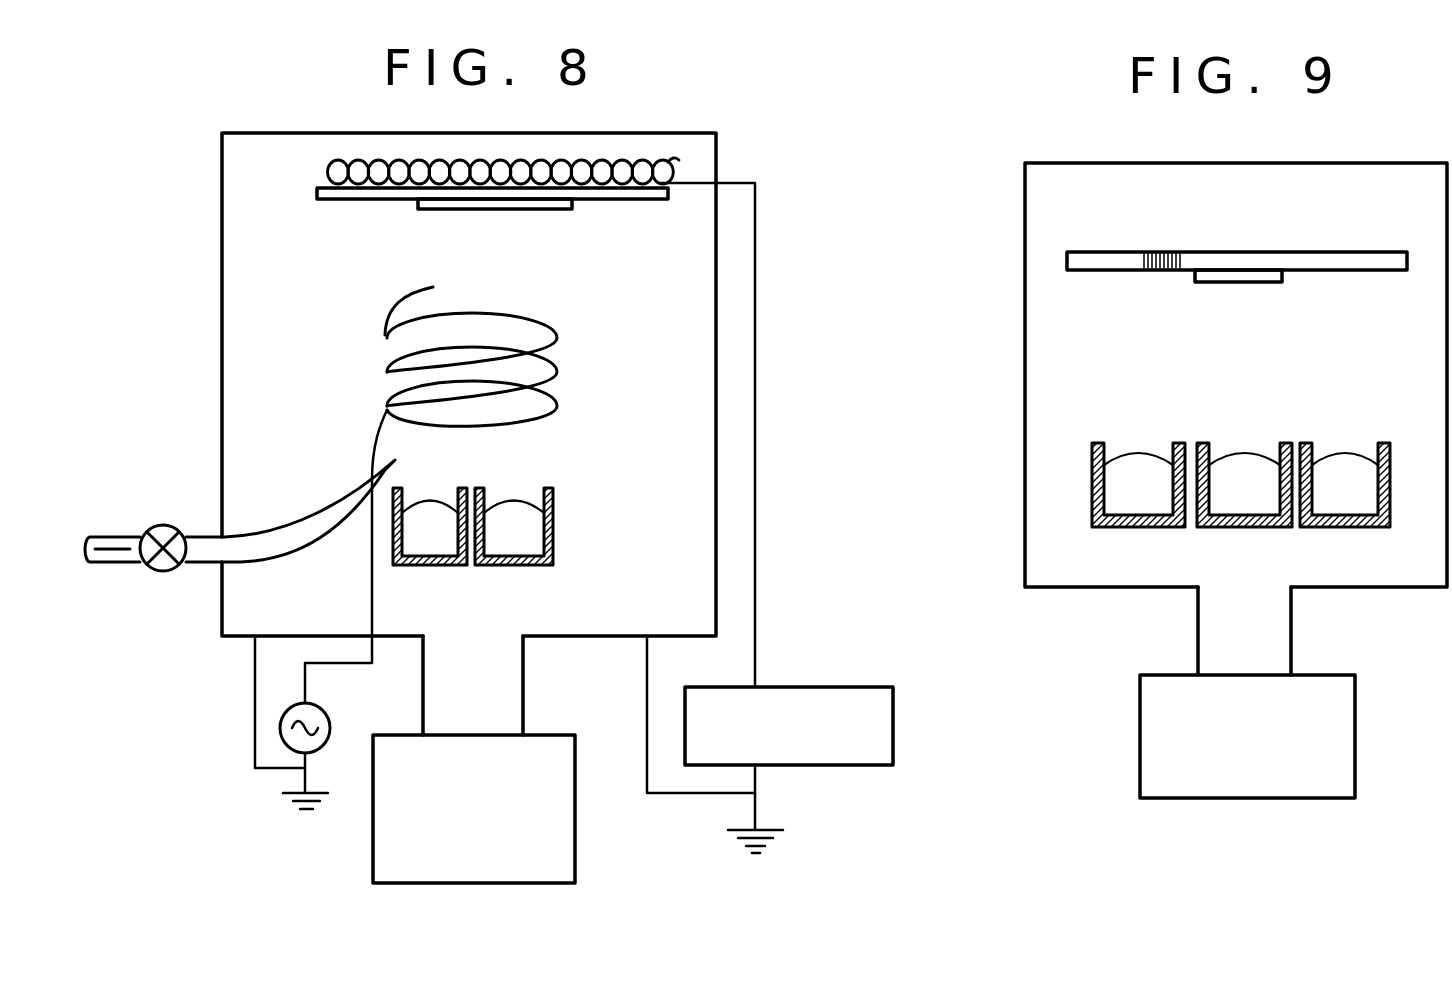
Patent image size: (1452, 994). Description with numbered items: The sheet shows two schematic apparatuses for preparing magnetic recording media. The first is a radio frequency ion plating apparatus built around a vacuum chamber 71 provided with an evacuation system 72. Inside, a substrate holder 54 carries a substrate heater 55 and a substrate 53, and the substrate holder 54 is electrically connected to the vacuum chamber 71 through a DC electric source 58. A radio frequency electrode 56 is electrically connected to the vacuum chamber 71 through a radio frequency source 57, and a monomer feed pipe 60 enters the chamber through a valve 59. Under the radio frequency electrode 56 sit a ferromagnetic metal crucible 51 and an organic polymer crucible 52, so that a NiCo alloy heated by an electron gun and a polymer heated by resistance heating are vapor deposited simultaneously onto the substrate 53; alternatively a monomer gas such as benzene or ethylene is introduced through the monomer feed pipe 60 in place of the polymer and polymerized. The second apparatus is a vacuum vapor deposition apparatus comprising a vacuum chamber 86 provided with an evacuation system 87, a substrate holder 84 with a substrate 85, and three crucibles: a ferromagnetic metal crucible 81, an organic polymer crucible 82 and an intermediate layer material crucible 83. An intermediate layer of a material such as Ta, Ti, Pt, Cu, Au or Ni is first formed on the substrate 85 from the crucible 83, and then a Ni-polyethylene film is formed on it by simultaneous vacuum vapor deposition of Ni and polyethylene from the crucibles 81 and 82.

In FIG. 8, the ferromagnetic metal crucible 51 is at (427, 566).
In FIG. 8, the organic polymer crucible 52 is at (535, 566).
In FIG. 8, the substrate 53 is at (530, 209).
In FIG. 8, the substrate holder 54 is at (652, 200).
In FIG. 8, the substrate heater 55 is at (345, 160).
In FIG. 8, the radio frequency electrode 56 is at (385, 360).
In FIG. 8, the radio frequency source 57 is at (293, 710).
In FIG. 8, the DC electric source 58 is at (810, 687).
In FIG. 8, the valve 59 is at (160, 573).
In FIG. 8, the monomer feed pipe 60 is at (118, 538).
In FIG. 8, the vacuum chamber 71 is at (718, 512).
In FIG. 8, the evacuation system 72 is at (575, 827).
In FIG. 9, the ferromagnetic metal crucible 81 is at (1097, 443).
In FIG. 9, the organic polymer crucible 82 is at (1230, 528).
In FIG. 9, the intermediate layer material crucible 83 is at (1390, 457).
In FIG. 9, the substrate holder 84 is at (1340, 256).
In FIG. 9, the substrate 85 is at (1273, 283).
In FIG. 9, the vacuum chamber 86 is at (1395, 588).
In FIG. 9, the evacuation system 87 is at (1357, 752).